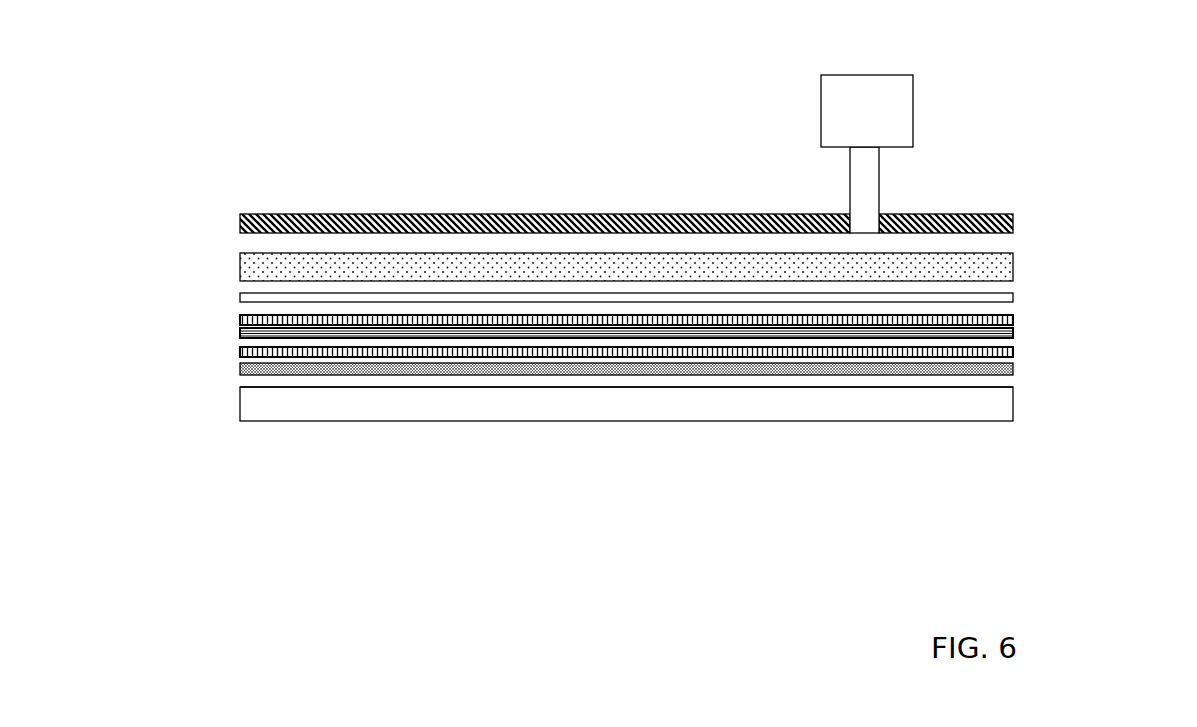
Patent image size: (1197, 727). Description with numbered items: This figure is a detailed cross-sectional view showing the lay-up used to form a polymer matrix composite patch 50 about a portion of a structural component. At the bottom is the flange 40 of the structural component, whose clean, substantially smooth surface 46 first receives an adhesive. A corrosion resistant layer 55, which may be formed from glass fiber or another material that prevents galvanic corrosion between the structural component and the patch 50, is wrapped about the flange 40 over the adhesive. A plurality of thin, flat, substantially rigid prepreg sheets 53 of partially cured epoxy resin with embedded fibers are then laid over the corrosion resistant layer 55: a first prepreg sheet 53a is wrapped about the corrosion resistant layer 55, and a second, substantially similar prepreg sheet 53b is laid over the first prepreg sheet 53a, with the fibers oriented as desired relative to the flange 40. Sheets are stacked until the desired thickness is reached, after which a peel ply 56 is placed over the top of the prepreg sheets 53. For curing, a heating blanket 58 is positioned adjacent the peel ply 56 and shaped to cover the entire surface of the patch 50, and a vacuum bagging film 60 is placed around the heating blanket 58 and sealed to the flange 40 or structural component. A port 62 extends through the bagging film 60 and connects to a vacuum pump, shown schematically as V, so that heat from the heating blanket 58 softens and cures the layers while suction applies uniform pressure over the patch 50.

The polymer matrix composite patch 50 is at (203, 133).
The vacuum bagging film 60 is at (1013, 222).
The port 62 is at (850, 205).
The heating blanket 58 is at (240, 268).
The peel ply 56 is at (1013, 298).
The prepreg sheets 53 is at (240, 322).
The second prepreg sheet 53b is at (1013, 334).
The first prepreg sheet 53a is at (240, 352).
The corrosion resistant layer 55 is at (1013, 368).
The surface 46 is at (258, 388).
The flange 40 is at (382, 410).